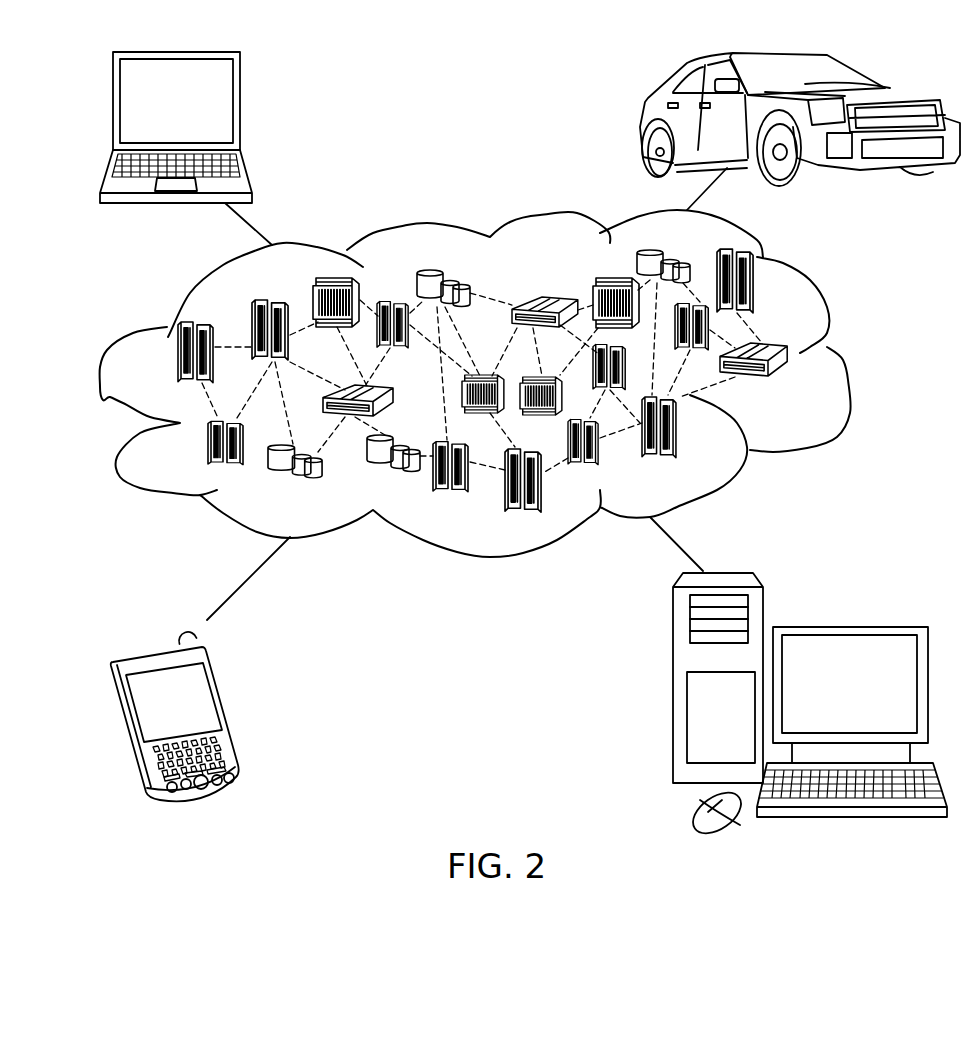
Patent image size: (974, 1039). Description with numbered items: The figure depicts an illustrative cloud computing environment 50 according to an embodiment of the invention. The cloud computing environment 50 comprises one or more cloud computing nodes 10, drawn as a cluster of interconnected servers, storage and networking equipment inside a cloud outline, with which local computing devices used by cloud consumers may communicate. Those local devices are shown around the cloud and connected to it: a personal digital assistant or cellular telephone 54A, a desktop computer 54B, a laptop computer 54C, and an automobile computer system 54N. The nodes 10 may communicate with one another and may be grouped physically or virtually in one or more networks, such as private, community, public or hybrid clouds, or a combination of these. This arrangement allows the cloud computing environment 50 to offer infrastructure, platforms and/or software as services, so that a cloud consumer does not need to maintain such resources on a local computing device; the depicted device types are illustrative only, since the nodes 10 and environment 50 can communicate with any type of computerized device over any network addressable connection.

The cloud computing environment 50 is at (845, 358).
The cloud computing nodes 10 is at (792, 388).
The personal digital assistant or cellular telephone 54A is at (233, 718).
The desktop computer 54B is at (845, 626).
The laptop computer 54C is at (241, 108).
The automobile computer system 54N is at (643, 121).